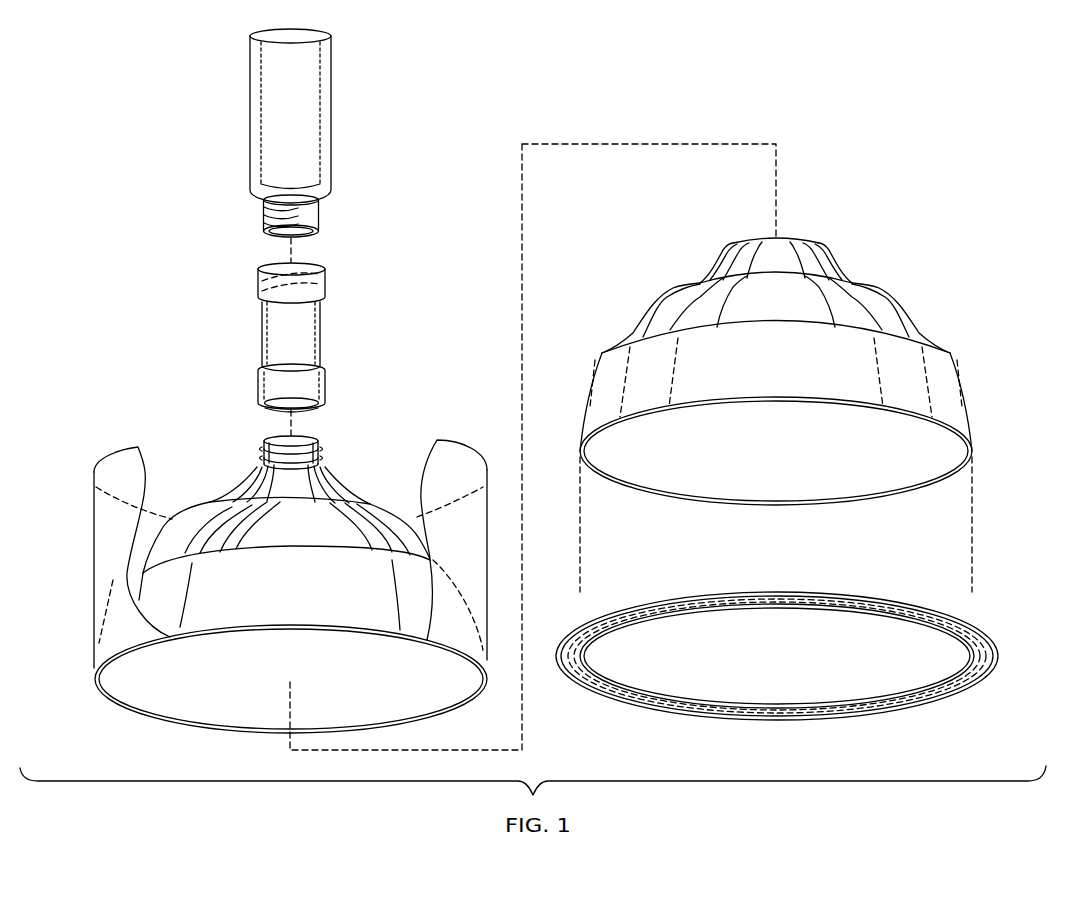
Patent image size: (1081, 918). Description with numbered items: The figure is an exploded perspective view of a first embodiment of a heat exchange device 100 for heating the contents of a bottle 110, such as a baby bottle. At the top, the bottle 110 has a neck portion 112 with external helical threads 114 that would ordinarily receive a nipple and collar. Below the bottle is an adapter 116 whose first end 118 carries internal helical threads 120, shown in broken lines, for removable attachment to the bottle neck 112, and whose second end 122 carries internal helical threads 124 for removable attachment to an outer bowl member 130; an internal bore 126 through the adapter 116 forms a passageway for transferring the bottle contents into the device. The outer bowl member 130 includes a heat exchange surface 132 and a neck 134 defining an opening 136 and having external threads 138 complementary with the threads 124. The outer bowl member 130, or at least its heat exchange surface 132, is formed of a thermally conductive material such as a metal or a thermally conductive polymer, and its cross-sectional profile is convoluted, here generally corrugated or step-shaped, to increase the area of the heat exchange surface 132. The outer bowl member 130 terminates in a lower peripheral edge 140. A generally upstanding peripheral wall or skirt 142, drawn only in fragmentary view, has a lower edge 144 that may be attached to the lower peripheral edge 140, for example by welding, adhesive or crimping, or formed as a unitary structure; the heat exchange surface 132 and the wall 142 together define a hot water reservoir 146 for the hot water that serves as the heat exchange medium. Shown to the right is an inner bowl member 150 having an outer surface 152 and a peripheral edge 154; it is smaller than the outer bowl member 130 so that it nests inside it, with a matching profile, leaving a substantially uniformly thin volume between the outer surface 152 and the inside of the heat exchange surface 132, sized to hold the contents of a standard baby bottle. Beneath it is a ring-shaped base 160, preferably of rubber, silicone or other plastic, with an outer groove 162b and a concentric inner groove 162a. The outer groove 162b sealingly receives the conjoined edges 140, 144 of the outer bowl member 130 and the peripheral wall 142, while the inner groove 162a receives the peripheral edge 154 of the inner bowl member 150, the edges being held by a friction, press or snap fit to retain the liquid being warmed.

The heat exchange device 100 is at (763, 109).
The bottle 110 is at (323, 110).
The neck portion 112 is at (322, 208).
The external helical threads 114 is at (353, 236).
The adapter 116 is at (283, 334).
The first end 118 is at (260, 277).
The internal helical threads 120 is at (262, 284).
The second end 122 is at (262, 404).
The internal helical threads 124 is at (303, 404).
The internal bore 126 is at (320, 398).
The outer bowl member 130 is at (276, 519).
The heat exchange surface 132 is at (141, 447).
The neck 134 is at (264, 446).
The opening 136 is at (318, 428).
The external threads 138 is at (322, 450).
The lower peripheral edge 140 is at (263, 579).
The peripheral wall 142 is at (107, 527).
The lower edge 144 is at (107, 685).
The hot water reservoir 146 is at (410, 458).
The inner bowl member 150 is at (776, 415).
The outer surface 152 is at (673, 307).
The peripheral edge 154 is at (657, 410).
The base 160 is at (785, 677).
The inner groove 162a is at (824, 714).
The outer groove 162b is at (644, 710).